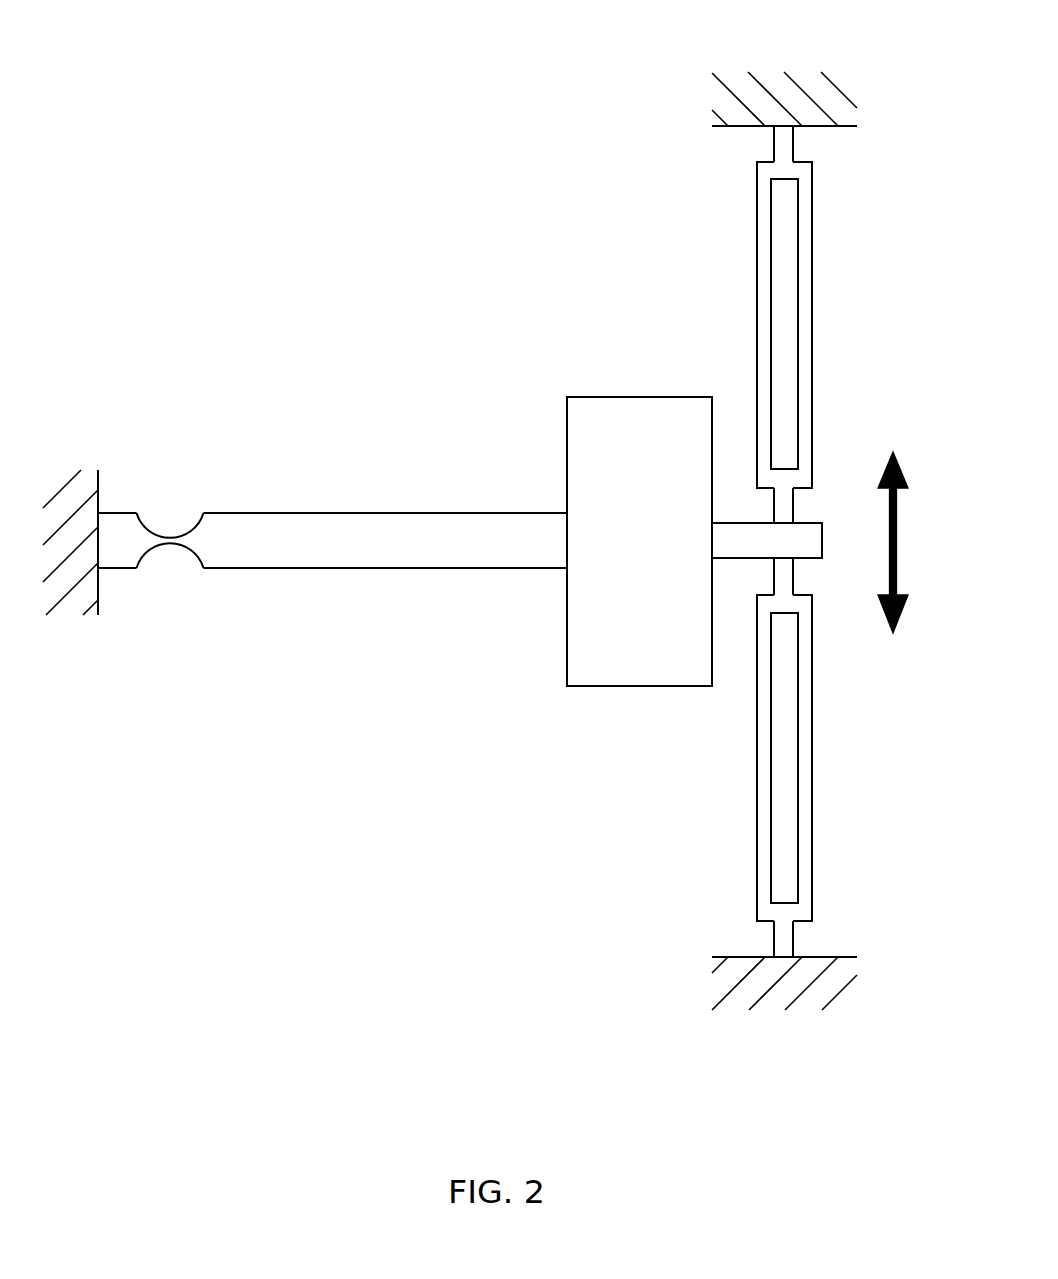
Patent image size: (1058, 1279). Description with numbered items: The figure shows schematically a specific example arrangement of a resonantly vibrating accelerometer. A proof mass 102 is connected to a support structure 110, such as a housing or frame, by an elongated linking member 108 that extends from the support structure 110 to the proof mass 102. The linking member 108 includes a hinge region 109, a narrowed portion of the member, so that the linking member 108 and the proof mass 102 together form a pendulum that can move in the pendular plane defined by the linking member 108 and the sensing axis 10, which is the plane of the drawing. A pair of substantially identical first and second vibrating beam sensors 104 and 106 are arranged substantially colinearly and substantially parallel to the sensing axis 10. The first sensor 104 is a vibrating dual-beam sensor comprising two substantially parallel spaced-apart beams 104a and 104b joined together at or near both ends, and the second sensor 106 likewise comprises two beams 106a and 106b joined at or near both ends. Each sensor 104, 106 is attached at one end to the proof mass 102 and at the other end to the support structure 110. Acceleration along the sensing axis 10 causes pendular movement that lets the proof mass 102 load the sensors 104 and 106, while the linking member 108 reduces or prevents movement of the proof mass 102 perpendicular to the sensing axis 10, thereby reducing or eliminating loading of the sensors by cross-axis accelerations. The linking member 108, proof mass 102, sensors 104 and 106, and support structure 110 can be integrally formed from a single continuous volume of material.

The sensing axis 10 is at (897, 521).
The proof mass 102 is at (619, 536).
The first vibrating beam sensor 104 is at (691, 324).
The beam 104a is at (763, 342).
The beam 104b is at (807, 270).
The second vibrating beam sensor 106 is at (681, 758).
The beam 106a is at (762, 802).
The beam 106b is at (807, 762).
The elongated linking member 108 is at (332, 606).
The hinge region 109 is at (168, 545).
The support structure 110 is at (63, 505).